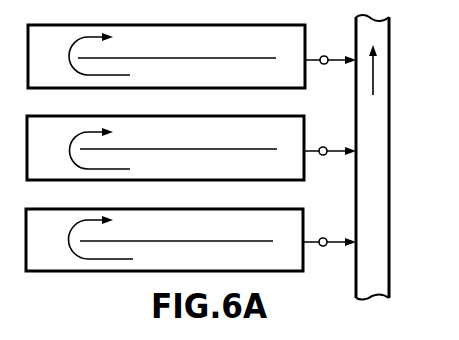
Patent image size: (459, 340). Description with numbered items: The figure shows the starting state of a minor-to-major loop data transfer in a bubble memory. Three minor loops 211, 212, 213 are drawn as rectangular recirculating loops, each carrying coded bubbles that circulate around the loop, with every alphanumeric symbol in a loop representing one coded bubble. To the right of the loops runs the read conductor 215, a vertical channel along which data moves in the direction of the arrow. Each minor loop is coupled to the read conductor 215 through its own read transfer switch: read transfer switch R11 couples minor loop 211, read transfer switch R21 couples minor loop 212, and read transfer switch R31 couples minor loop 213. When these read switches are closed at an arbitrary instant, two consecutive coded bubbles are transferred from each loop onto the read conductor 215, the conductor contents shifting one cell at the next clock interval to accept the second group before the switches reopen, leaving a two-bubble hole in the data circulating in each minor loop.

The minor loop 211 is at (58, 213).
The minor loop 212 is at (55, 119).
The minor loop 213 is at (58, 30).
The read conductor 215 is at (385, 86).
The read transfer switch R31 is at (322, 35).
The read transfer switch R21 is at (322, 135).
The read transfer switch R11 is at (322, 227).